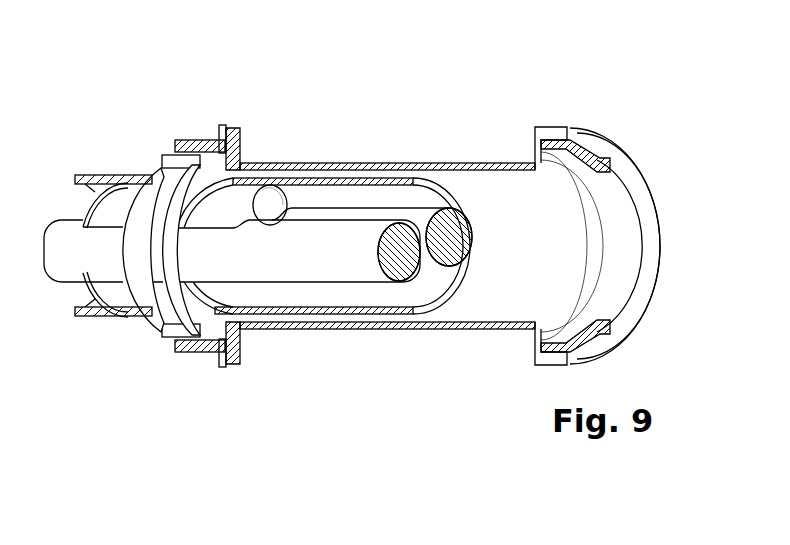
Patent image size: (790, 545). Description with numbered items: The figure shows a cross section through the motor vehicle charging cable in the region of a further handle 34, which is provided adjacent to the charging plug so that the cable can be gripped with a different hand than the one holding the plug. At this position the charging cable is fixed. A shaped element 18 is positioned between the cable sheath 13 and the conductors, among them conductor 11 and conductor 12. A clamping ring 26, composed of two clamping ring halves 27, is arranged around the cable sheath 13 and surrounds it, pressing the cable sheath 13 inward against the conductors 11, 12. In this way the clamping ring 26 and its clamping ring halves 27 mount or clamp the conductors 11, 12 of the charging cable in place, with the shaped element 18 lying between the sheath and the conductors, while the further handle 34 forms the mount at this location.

The conductor 11 is at (333, 263).
The conductor 12 is at (381, 210).
The cable sheath 13 is at (340, 172).
The shaped element 18 is at (245, 198).
The clamping ring 26 is at (137, 207).
The clamping ring halves 27 is at (150, 213).
The further handle 34 is at (467, 327).